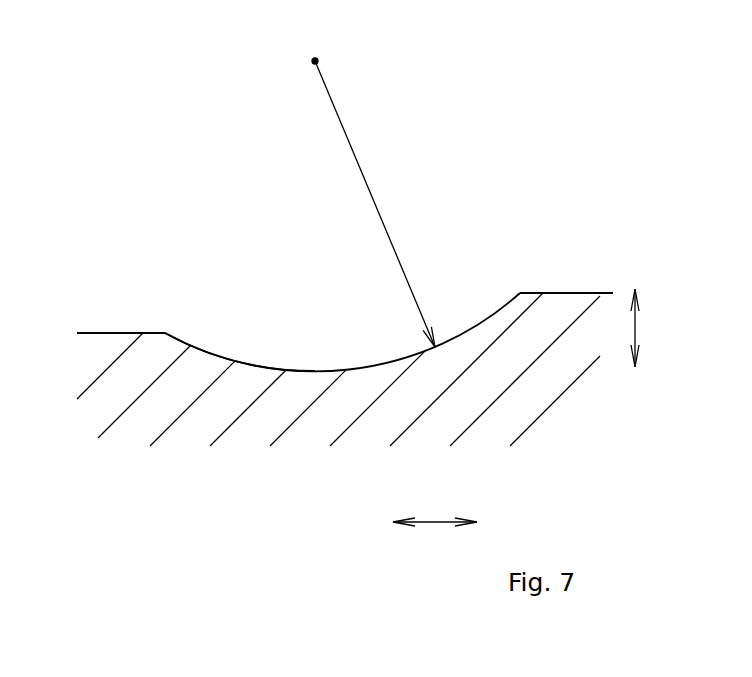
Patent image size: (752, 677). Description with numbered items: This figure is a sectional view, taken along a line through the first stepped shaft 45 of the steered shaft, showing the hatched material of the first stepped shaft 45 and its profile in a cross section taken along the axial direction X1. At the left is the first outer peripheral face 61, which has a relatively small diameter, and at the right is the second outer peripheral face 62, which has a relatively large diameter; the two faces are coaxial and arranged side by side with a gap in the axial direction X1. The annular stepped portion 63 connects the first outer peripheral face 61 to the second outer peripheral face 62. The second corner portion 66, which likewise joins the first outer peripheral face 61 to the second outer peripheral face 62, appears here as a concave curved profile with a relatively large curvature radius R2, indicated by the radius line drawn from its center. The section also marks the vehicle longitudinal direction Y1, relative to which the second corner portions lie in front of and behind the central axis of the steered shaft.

The first outer peripheral face 61 is at (121, 333).
The second outer peripheral face 62 is at (568, 293).
The annular stepped portion 63 is at (313, 352).
The second corner portion 66 is at (222, 353).
The first stepped shaft 45 is at (252, 433).
The curvature radius R2 is at (364, 176).
The vehicle longitudinal direction Y1 is at (637, 328).
The axial direction X1 is at (436, 521).